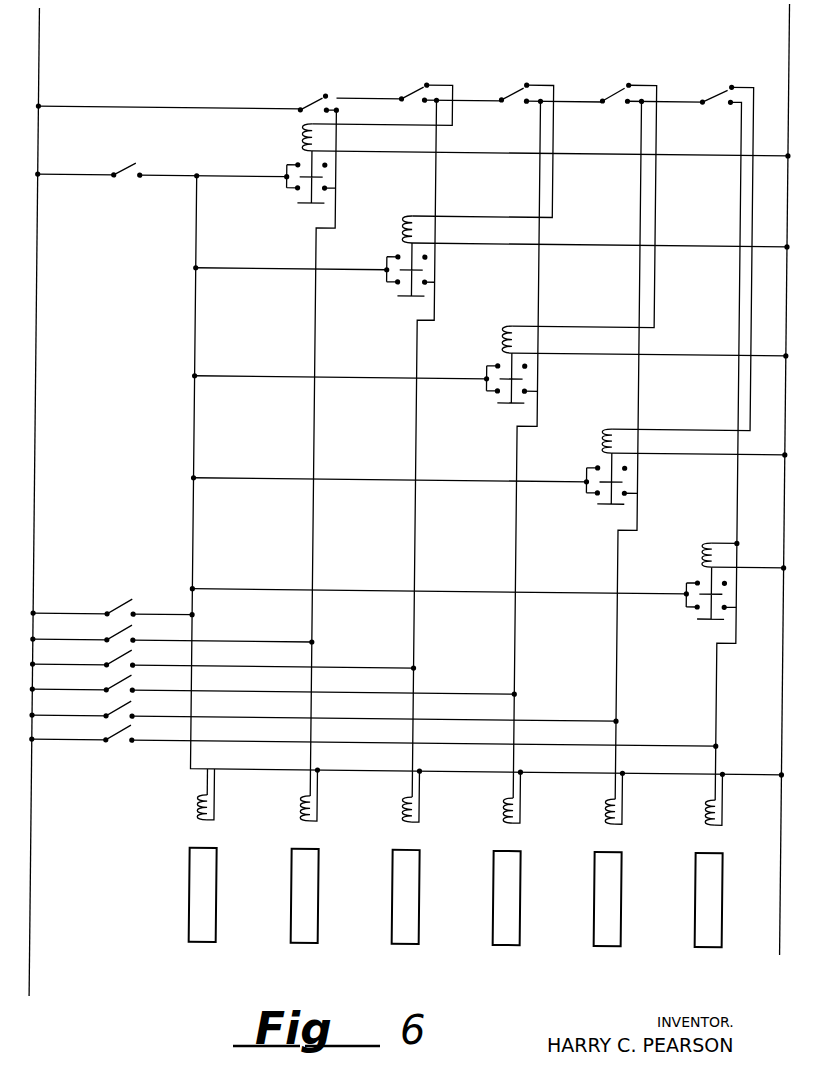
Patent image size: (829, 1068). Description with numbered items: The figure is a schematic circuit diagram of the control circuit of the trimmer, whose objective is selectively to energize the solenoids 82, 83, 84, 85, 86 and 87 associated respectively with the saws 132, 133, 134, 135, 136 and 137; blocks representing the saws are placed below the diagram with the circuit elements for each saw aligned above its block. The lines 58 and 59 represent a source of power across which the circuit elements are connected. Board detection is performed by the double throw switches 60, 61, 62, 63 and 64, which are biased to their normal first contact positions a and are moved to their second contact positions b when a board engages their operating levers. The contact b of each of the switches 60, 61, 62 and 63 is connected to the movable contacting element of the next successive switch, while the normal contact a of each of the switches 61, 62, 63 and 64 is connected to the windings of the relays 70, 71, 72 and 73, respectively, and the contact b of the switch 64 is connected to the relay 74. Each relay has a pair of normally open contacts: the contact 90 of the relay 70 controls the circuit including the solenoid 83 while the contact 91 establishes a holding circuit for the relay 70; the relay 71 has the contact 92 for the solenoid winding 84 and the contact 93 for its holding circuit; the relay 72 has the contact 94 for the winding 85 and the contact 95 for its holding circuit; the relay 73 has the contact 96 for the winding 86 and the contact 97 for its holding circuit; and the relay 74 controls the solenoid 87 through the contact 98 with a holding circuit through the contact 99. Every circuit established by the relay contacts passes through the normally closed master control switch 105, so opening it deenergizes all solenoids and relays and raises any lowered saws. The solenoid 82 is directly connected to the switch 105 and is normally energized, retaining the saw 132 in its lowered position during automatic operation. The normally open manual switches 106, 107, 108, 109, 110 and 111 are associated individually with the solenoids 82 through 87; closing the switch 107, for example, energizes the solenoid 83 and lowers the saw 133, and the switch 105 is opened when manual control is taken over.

The power line 58 is at (34, 57).
The power line 59 is at (784, 24).
The double throw switch 60 is at (305, 101).
The double throw switch 61 is at (398, 97).
The double throw switch 62 is at (499, 97).
The double throw switch 63 is at (606, 96).
The double throw switch 64 is at (709, 95).
The relay 70 is at (304, 139).
The relay 71 is at (403, 233).
The relay 72 is at (504, 340).
The relay 73 is at (606, 439).
The relay 74 is at (697, 556).
The solenoid 82 is at (196, 795).
The solenoid 83 is at (303, 815).
The solenoid 84 is at (405, 815).
The solenoid 85 is at (508, 815).
The solenoid 86 is at (608, 815).
The solenoid 87 is at (704, 814).
The relay contact 90 is at (333, 190).
The relay contact 91 is at (336, 168).
The relay contact 92 is at (433, 283).
The relay contact 93 is at (437, 260).
The relay contact 94 is at (535, 391).
The relay contact 95 is at (537, 367).
The relay contact 96 is at (636, 492).
The relay contact 97 is at (638, 468).
The relay contact 98 is at (738, 605).
The relay contact 99 is at (739, 582).
The master control switch 105 is at (109, 176).
The manually operated switch 106 is at (111, 611).
The manually operated switch 107 is at (111, 637).
The manually operated switch 108 is at (111, 662).
The manually operated switch 109 is at (111, 687).
The manually operated switch 110 is at (111, 713).
The manually operated switch 111 is at (111, 738).
The saw 132 is at (205, 944).
The saw 133 is at (307, 944).
The saw 134 is at (408, 944).
The saw 135 is at (509, 944).
The saw 136 is at (610, 944).
The saw 137 is at (711, 944).